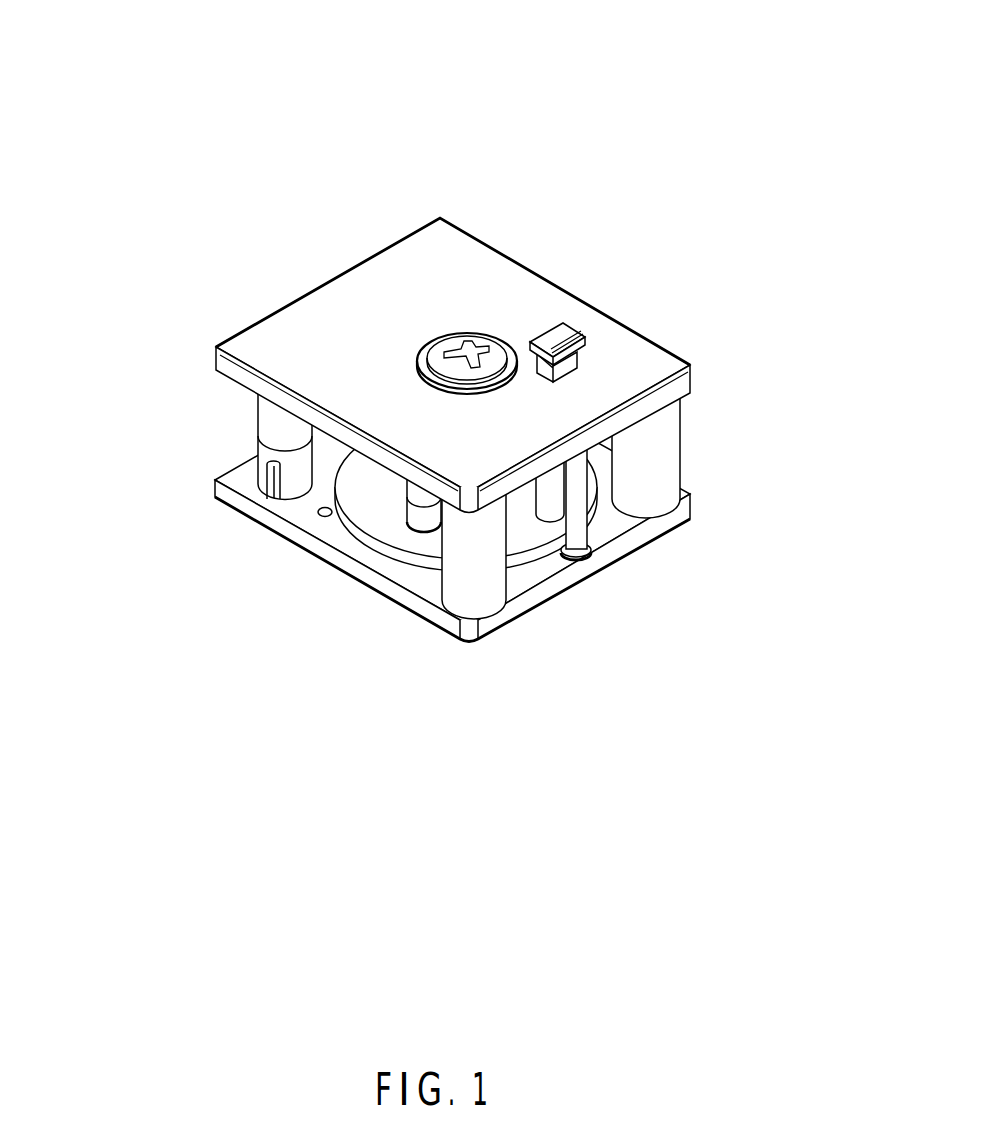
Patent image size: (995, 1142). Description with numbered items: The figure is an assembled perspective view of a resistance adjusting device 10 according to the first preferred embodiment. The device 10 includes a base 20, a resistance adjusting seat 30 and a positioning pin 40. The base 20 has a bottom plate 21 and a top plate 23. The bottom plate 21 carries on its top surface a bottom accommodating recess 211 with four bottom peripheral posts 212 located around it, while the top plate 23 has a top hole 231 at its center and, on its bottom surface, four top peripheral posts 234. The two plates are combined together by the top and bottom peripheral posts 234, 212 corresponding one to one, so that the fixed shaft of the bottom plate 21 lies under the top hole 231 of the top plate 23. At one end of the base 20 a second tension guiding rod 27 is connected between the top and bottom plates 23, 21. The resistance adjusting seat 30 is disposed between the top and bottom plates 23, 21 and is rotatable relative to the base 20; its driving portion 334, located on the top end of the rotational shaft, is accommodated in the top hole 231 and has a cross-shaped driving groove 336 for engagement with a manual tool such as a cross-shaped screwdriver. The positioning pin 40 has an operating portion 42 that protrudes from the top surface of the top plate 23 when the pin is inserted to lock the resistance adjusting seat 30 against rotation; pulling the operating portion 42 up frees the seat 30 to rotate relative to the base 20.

The resistance adjusting device 10 is at (638, 93).
The base 20 is at (93, 315).
The bottom plate 21 is at (230, 503).
The top plate 23 is at (258, 347).
The second tension guiding rod 27 is at (578, 535).
The resistance adjusting seat 30 is at (427, 535).
The positioning pin 40 is at (583, 328).
The operating portion 42 is at (563, 342).
The bottom accommodating recess 211 is at (393, 537).
The bottom peripheral posts 212 is at (290, 490).
The top hole 231 is at (416, 362).
The top peripheral posts 234 is at (300, 435).
The driving portion 334 is at (443, 350).
The cross-shaped driving groove 336 is at (467, 345).